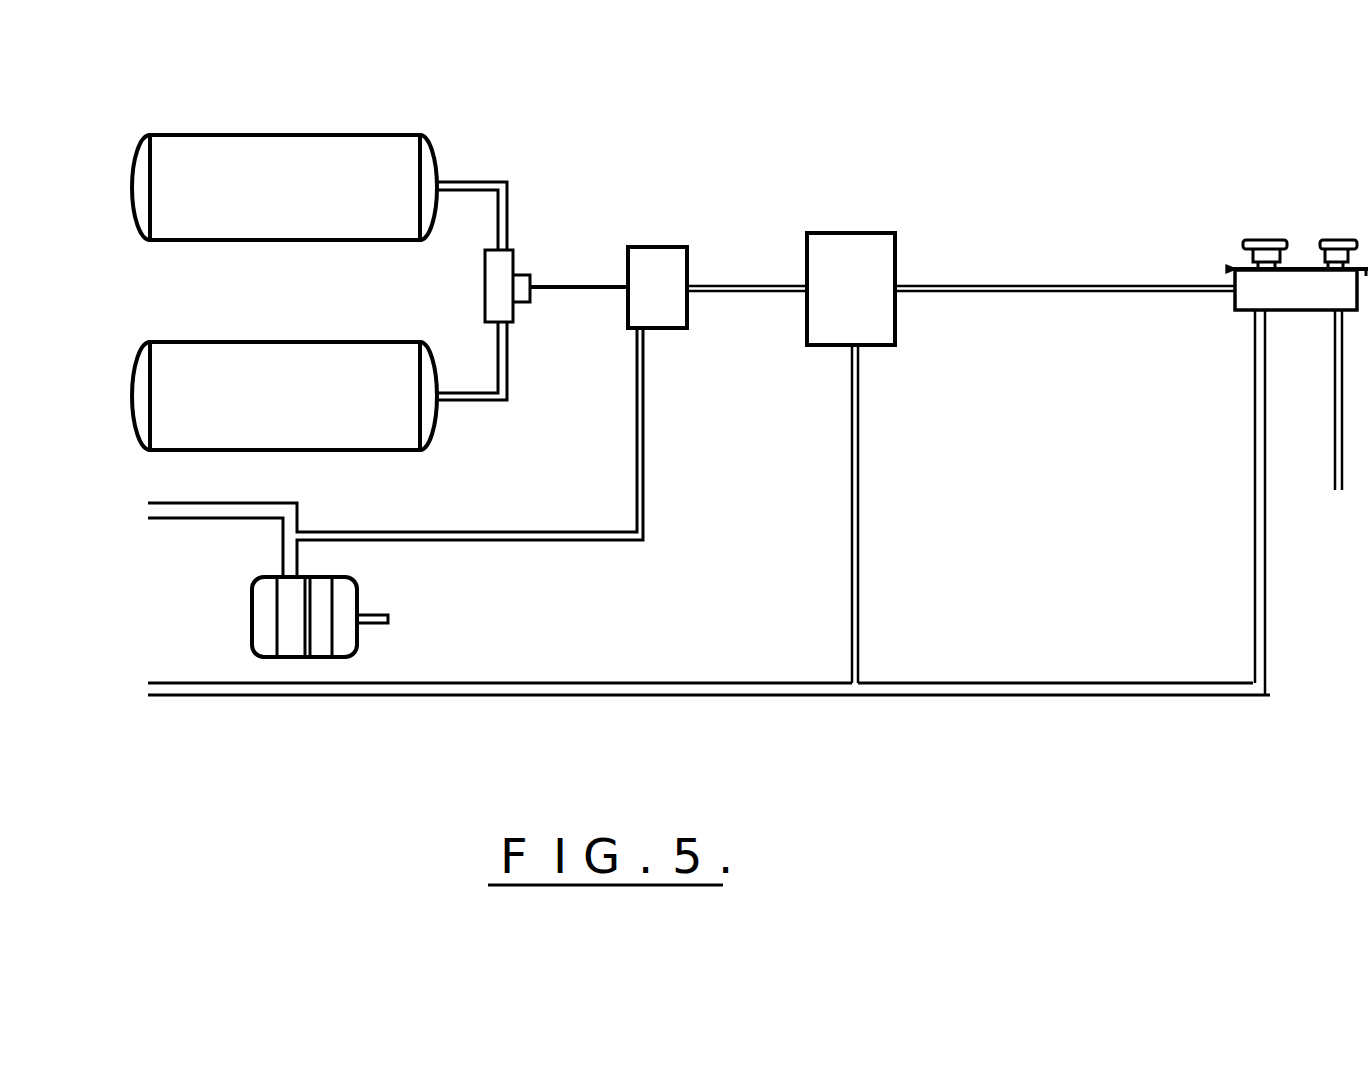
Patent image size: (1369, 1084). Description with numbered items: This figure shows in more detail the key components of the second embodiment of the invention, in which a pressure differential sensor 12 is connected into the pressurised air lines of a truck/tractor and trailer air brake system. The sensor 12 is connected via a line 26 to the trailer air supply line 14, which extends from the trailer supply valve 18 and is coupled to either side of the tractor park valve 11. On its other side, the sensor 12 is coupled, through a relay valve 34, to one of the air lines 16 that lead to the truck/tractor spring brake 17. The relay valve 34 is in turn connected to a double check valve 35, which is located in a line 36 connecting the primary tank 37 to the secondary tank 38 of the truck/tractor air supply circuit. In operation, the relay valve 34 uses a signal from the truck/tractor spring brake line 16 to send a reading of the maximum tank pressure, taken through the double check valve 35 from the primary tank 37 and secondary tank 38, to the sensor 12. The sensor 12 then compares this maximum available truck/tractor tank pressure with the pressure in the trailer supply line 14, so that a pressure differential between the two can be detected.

The tractor park valve 11 is at (1343, 240).
The pressure differential sensor 12 is at (843, 265).
The air supply line 14 is at (782, 692).
The air line 16 is at (242, 510).
The truck/tractor spring brake 17 is at (345, 608).
The trailer supply valve 18 is at (1259, 240).
The line 26 is at (860, 447).
The relay valve 34 is at (657, 275).
The double check valve 35 is at (497, 265).
The line 36 is at (507, 367).
The primary tank 37 is at (330, 392).
The secondary tank 38 is at (322, 194).